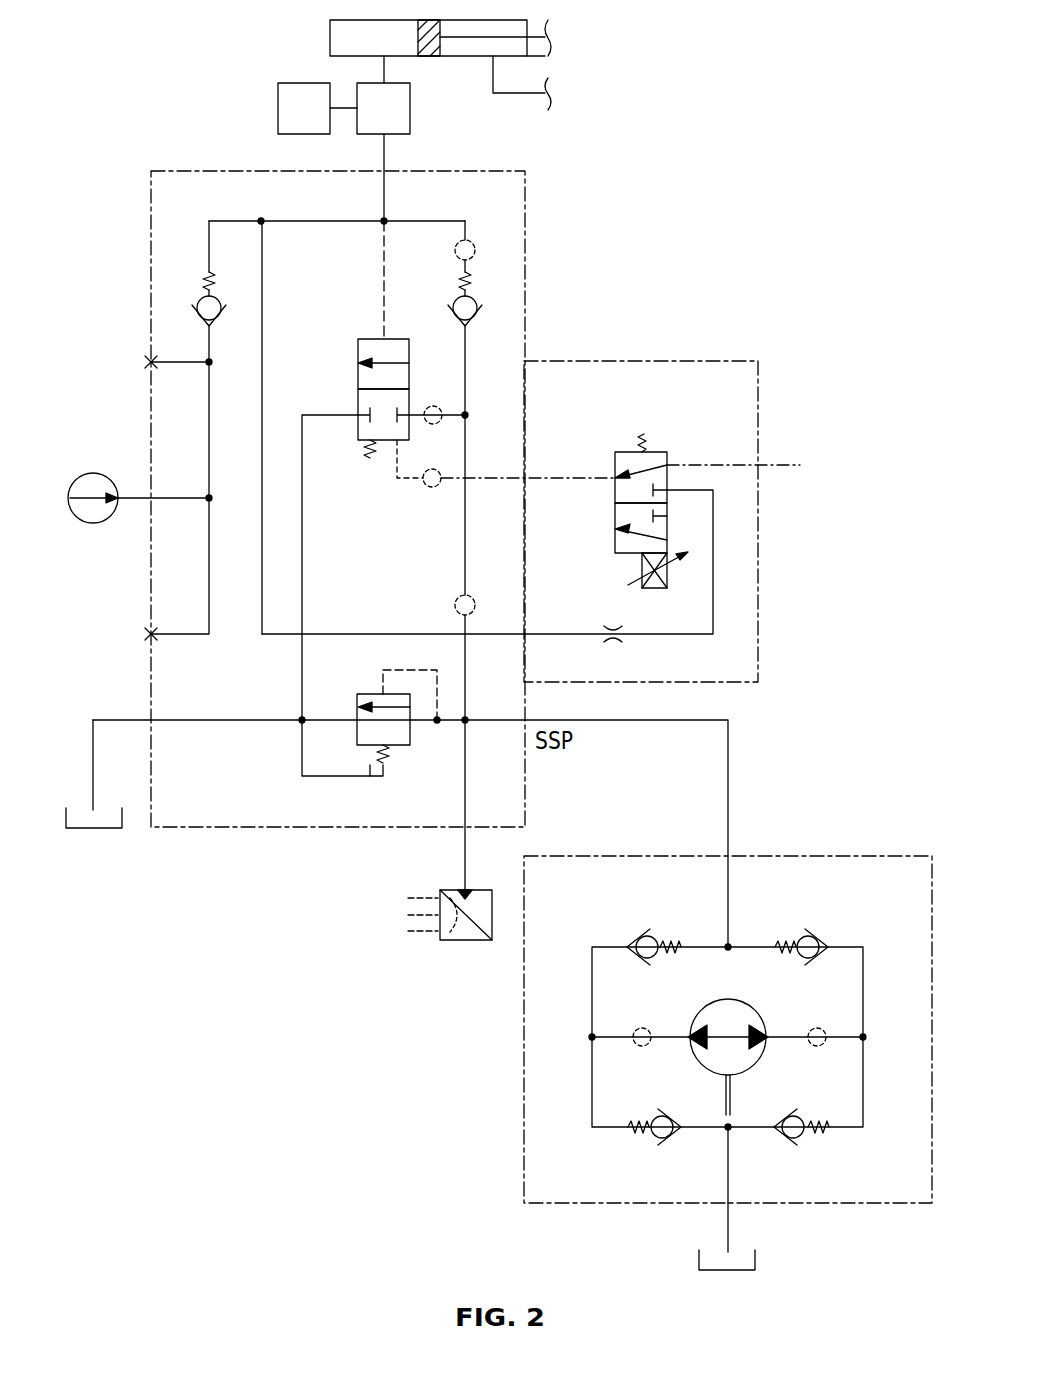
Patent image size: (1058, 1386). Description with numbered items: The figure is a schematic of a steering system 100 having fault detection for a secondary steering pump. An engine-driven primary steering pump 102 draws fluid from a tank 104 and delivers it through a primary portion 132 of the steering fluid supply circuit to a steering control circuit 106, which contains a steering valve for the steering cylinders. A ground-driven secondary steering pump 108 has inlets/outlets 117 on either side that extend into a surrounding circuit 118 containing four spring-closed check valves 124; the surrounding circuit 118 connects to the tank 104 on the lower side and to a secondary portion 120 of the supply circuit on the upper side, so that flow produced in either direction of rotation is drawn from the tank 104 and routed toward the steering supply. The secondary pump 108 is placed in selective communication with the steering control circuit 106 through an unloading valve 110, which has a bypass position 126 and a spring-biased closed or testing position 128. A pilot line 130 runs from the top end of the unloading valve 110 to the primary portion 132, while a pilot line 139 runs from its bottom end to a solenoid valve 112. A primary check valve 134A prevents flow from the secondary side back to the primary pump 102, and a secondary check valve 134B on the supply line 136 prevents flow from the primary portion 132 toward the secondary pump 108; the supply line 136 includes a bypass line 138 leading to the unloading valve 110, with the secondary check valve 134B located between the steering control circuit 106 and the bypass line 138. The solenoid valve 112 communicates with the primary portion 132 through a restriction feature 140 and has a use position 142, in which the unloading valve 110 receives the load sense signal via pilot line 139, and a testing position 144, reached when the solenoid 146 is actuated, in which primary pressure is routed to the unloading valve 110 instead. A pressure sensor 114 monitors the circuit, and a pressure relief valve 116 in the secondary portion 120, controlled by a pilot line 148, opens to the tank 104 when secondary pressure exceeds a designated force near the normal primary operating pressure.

The steering system 100 is at (815, 0).
The primary steering pump 102 is at (97, 472).
The tank 104 is at (95, 828).
The steering control circuit 106 is at (410, 107).
The secondary steering pump 108 is at (732, 1014).
The unloading valve 110 is at (352, 388).
The solenoid valve 112 is at (531, 521).
The pressure sensor 114 is at (462, 944).
The pressure relief valve 116 is at (370, 780).
The inlets/outlets 117 is at (642, 1028).
The surrounding circuit 118 is at (757, 945).
The secondary portion of steering fluid supply circuit 120 is at (301, 530).
The check valves 124 is at (630, 938).
The bypass position 126 is at (358, 352).
The closed or testing position 128 is at (358, 430).
The pilot line 130 is at (384, 271).
The primary portion of steering fluid supply circuit 132 is at (207, 248).
The primary check valve 134A is at (216, 325).
The secondary check valve 134B is at (472, 325).
The supply line 136 is at (455, 250).
The bypass line 138 is at (434, 405).
The pilot line 139 is at (430, 487).
The restriction feature 140 is at (608, 629).
The use position 142 is at (615, 466).
The testing position 144 is at (615, 520).
The solenoid 146 is at (642, 572).
The pilot line 148 is at (410, 670).